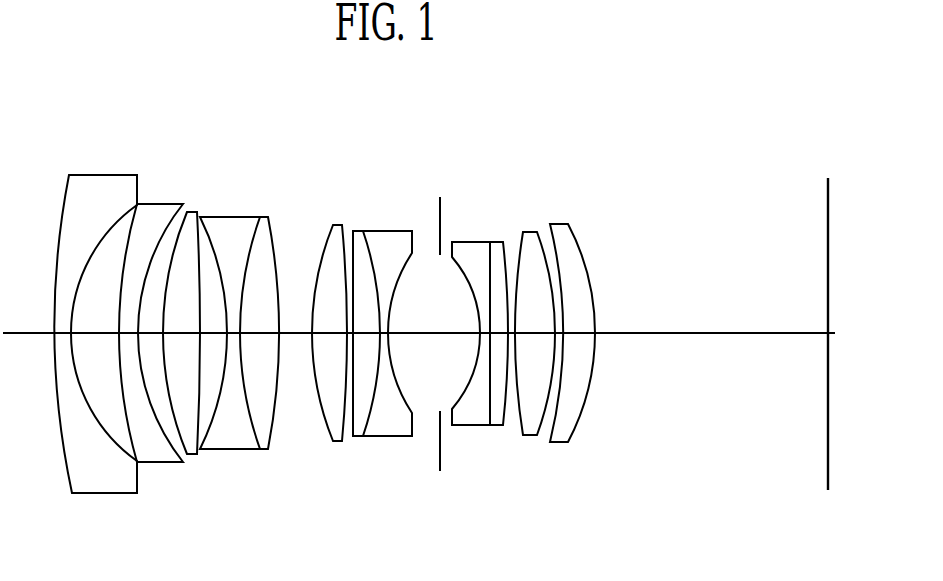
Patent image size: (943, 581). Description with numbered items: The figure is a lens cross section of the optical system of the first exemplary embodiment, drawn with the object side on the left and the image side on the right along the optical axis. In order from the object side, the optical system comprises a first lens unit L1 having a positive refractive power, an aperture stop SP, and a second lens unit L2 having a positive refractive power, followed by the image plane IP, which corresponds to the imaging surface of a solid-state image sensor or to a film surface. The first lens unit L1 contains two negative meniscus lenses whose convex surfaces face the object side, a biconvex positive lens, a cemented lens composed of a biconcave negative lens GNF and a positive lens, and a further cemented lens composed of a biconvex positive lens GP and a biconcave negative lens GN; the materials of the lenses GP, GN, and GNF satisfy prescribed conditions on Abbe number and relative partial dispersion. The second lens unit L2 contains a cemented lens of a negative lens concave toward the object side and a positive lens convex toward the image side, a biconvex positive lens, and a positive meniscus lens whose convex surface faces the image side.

The first lens unit L1 is at (405, 512).
The second lens unit L2 is at (603, 512).
The negative lens GNF is at (224, 225).
The positive lens GP is at (357, 264).
The negative lens GN is at (387, 250).
The aperture stop SP is at (447, 205).
The image plane IP is at (823, 216).